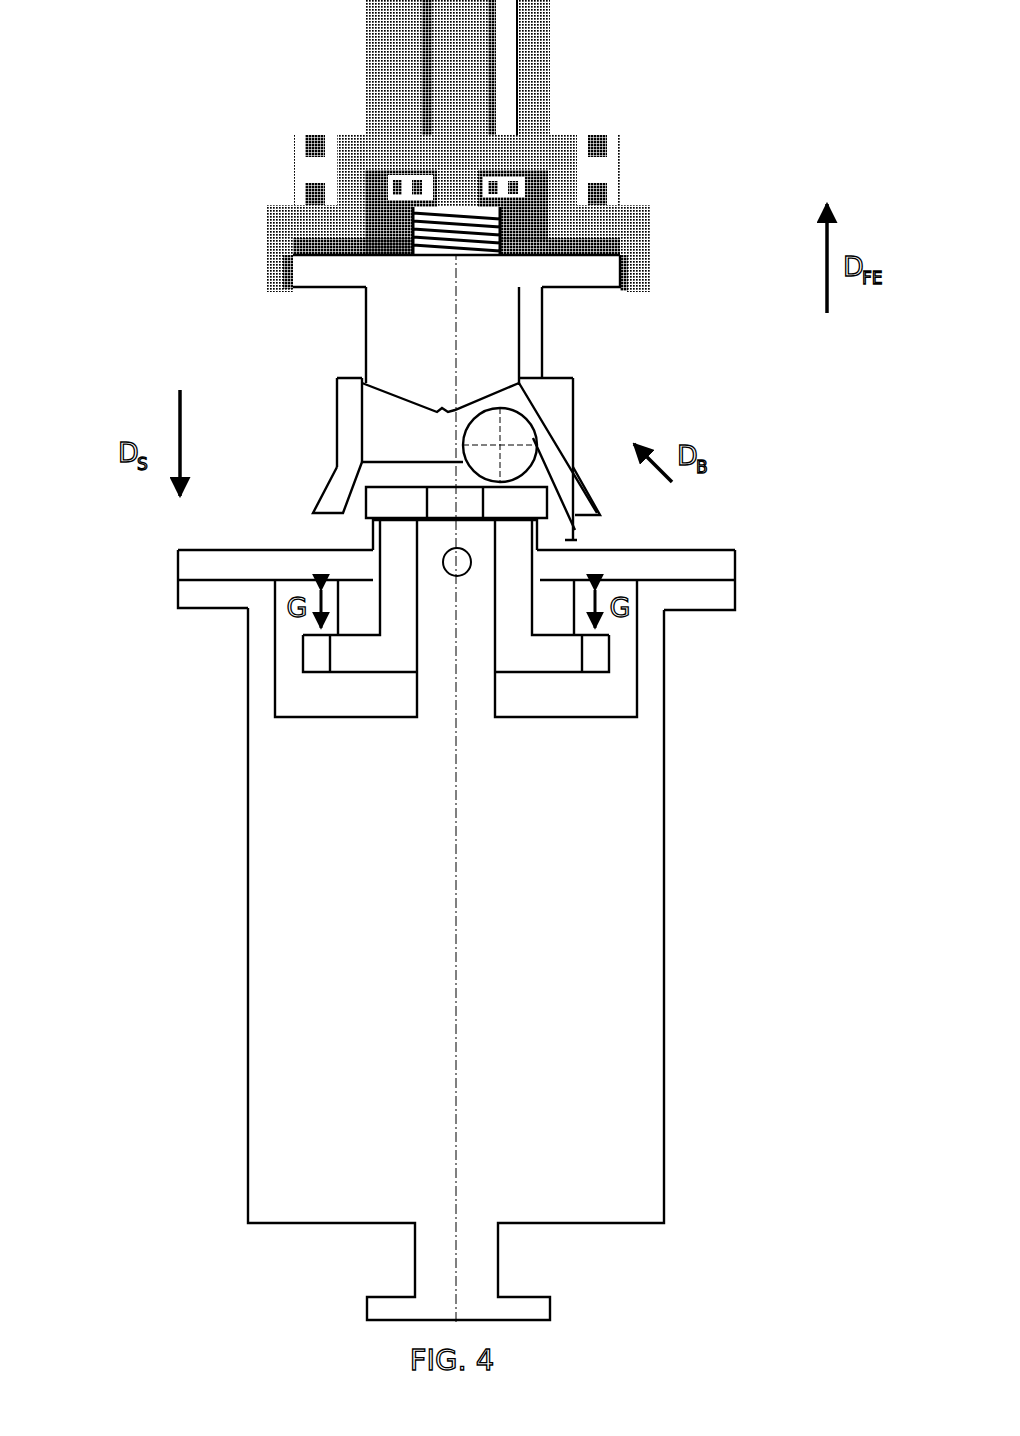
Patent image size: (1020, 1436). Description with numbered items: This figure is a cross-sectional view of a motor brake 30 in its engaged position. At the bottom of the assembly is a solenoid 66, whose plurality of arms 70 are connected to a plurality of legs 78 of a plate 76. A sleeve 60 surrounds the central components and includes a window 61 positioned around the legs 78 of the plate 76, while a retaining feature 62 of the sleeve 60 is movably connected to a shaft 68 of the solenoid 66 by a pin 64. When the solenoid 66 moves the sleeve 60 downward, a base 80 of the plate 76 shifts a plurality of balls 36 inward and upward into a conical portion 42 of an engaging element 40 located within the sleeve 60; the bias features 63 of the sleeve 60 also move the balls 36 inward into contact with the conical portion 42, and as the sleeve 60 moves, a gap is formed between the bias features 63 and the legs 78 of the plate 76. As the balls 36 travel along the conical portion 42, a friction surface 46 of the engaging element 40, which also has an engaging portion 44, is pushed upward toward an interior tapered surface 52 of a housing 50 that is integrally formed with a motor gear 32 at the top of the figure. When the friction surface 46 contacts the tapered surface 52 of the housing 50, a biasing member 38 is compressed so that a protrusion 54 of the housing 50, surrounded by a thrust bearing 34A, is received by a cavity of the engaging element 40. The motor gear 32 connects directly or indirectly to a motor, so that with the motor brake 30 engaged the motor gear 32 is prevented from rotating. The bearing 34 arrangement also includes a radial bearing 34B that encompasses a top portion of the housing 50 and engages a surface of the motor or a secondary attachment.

The motor brake 30 is at (195, 75).
The motor gear 32 is at (540, 90).
The bearing 34 is at (438, 150).
The thrust bearing 34A is at (507, 183).
The radial bearing 34B is at (305, 180).
The ball 36 is at (520, 455).
The biasing member 38 is at (453, 252).
The engaging element 40 is at (584, 308).
The conical portion 42 is at (463, 377).
The engaging portion 44 is at (345, 283).
The friction surface 46 is at (270, 281).
The housing 50 is at (565, 152).
The tapered surface 52 is at (268, 247).
The protrusion 54 is at (456, 172).
The sleeve 60 is at (345, 425).
The window 61 is at (642, 644).
The retaining feature 62 is at (330, 645).
The bias feature 63 is at (597, 513).
The pin 64 is at (440, 585).
The solenoid 66 is at (655, 940).
The shaft 68 is at (470, 655).
The arm 70 is at (210, 598).
The plate 76 is at (718, 546).
The leg 78 is at (195, 560).
The base 80 is at (397, 498).